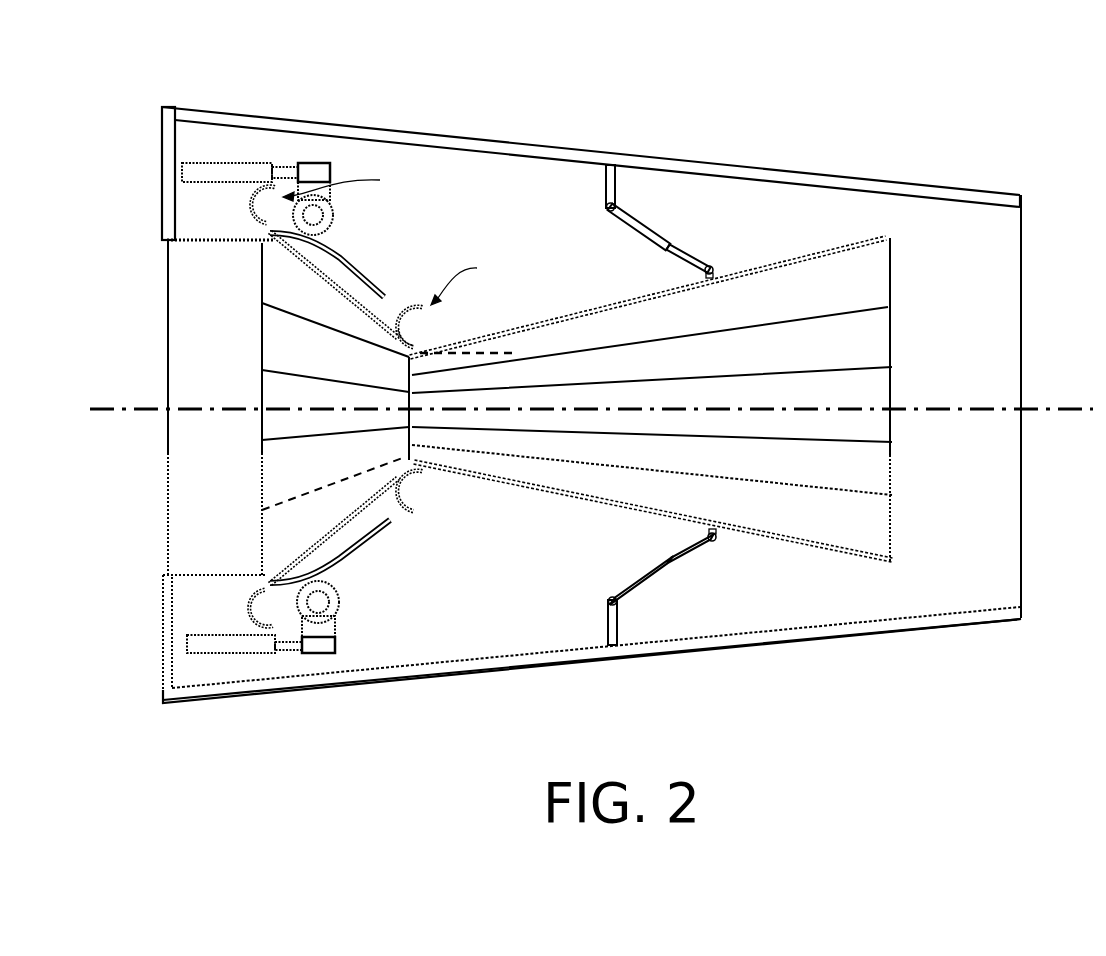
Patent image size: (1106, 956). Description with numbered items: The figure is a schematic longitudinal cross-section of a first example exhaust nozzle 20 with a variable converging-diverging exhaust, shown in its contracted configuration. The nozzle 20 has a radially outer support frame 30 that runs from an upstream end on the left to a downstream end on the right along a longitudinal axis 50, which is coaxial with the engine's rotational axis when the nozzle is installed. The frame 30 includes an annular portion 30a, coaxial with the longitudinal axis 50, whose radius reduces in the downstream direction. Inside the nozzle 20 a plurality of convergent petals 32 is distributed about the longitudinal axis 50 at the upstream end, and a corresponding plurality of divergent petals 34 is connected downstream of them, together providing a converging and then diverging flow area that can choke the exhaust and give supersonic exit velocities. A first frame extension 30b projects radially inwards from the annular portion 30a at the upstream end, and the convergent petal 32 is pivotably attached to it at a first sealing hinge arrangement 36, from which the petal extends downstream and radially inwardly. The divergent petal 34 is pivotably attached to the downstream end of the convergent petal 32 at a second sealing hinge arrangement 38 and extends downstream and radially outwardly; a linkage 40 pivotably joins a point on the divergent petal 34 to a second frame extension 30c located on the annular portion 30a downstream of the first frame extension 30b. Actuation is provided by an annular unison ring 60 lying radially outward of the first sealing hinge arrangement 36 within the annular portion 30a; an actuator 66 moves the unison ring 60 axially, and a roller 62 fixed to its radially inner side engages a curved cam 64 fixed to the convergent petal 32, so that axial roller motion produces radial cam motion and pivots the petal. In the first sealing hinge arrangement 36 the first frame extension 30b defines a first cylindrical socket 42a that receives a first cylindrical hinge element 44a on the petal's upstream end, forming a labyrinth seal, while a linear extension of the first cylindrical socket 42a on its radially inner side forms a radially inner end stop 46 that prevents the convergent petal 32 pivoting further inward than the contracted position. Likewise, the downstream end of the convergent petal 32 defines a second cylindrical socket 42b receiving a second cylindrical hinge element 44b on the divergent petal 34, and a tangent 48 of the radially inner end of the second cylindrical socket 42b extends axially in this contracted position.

The exhaust nozzle 20 is at (587, 391).
The support frame 30 is at (613, 166).
The annular portion 30a is at (453, 145).
The first frame extension 30b is at (167, 174).
The second frame extension 30c is at (617, 190).
The convergent petal 32 is at (312, 275).
The divergent petal 34 is at (752, 268).
The first sealing hinge arrangement 36 is at (343, 185).
The second sealing hinge arrangement 38 is at (470, 281).
The linkage 40 is at (688, 258).
The first cylindrical socket 42a is at (253, 197).
The second cylindrical socket 42b is at (401, 303).
The first cylindrical hinge element 44a is at (255, 212).
The second cylindrical hinge element 44b is at (402, 330).
The radially inner end stop 46 is at (268, 243).
The tangent 48 is at (507, 352).
The longitudinal axis 50 is at (1032, 410).
The unison ring 60 is at (318, 165).
The roller 62 is at (323, 213).
The curved cam 64 is at (347, 258).
The actuator 66 is at (185, 170).